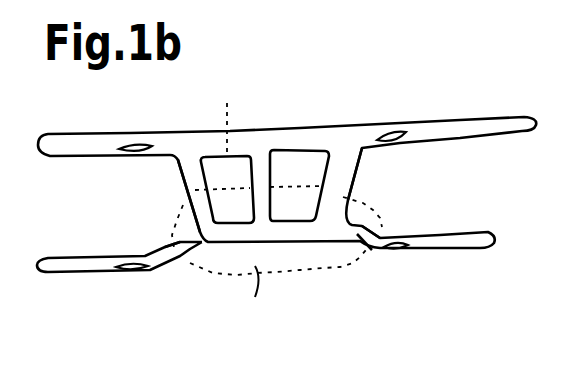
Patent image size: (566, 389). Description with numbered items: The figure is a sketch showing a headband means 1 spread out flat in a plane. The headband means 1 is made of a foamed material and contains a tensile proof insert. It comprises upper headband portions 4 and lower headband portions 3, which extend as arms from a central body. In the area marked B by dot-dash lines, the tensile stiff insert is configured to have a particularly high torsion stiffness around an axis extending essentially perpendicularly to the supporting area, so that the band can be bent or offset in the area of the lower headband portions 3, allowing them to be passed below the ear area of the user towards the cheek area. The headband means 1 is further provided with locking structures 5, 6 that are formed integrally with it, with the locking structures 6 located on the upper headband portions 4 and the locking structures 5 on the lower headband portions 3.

The headband means 1 is at (300, 138).
The lower headband portions 3 is at (363, 245).
The upper headband portions 4 is at (363, 142).
The locking structure 5 is at (400, 246).
The locking structure 6 is at (407, 134).